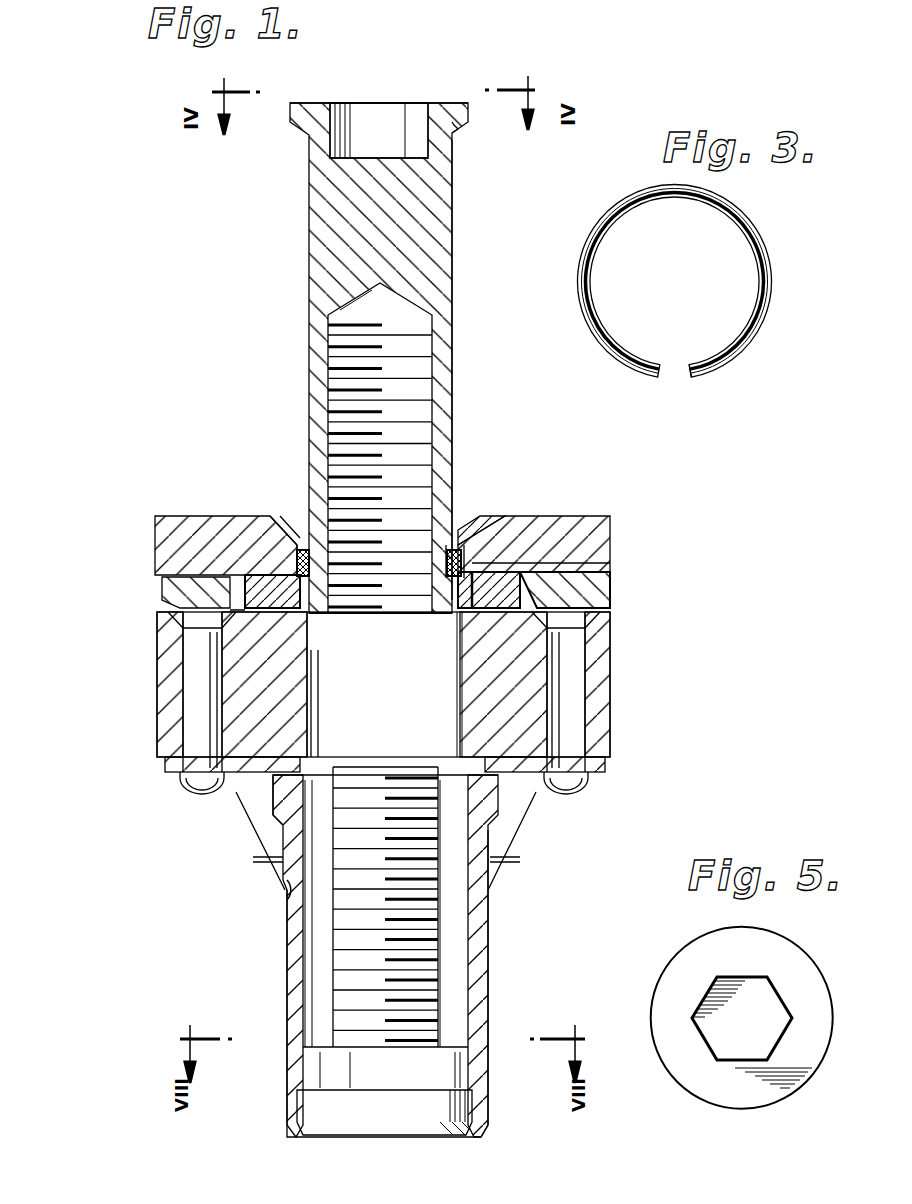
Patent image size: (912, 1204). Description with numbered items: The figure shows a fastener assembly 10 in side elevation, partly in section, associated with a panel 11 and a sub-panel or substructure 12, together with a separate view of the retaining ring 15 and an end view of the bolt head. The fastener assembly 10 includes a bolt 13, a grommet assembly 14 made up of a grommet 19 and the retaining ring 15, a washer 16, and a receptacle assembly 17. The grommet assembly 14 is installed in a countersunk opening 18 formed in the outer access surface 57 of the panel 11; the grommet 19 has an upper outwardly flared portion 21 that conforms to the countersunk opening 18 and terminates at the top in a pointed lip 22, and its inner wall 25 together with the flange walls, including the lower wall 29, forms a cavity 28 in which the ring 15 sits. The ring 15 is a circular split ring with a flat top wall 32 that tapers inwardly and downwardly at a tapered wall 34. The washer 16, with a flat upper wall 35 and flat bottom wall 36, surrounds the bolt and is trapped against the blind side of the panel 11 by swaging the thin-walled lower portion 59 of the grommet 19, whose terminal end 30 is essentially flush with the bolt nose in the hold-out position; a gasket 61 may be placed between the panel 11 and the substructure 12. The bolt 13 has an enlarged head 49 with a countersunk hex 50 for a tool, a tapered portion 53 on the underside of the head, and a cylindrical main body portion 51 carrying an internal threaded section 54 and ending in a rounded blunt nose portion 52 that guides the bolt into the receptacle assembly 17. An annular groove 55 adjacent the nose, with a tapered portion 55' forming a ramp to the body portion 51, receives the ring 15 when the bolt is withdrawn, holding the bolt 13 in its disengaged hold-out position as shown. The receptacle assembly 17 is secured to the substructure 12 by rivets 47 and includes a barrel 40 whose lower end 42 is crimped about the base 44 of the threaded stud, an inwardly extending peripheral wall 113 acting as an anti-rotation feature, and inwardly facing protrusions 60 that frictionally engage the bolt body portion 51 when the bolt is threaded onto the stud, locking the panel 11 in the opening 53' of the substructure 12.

In FIG. 1, the fastener assembly 10 is at (620, 506).
In FIG. 1, the panel 11 is at (612, 529).
In FIG. 1, the sub-panel or substructure 12 is at (612, 692).
In FIG. 1, the bolt 13 is at (306, 196).
In FIG. 5, the bolt 13 is at (725, 1113).
In FIG. 1, the grommet assembly 14 is at (430, 905).
In FIG. 1, the retaining ring 15 is at (448, 560).
In FIG. 3, the retaining ring 15 is at (780, 253).
In FIG. 1, the washer 16 is at (190, 622).
In FIG. 1, the receptacle assembly 17 is at (285, 1000).
In FIG. 1, the countersunk opening 18 is at (478, 546).
In FIG. 1, the grommet 19 is at (525, 580).
In FIG. 1, the upper outwardly flared portion 21 is at (300, 516).
In FIG. 1, the pointed lip 22 is at (482, 514).
In FIG. 1, the inner wall 25 is at (300, 648).
In FIG. 1, the cavity 28 is at (470, 572).
In FIG. 1, the lower wall 29 is at (470, 598).
In FIG. 1, the terminal end 30 is at (290, 600).
In FIG. 3, the flat top wall 32 is at (628, 232).
In FIG. 3, the tapered wall 34 is at (738, 333).
In FIG. 1, the flat upper wall 35 is at (612, 553).
In FIG. 1, the flat bottom wall 36 is at (598, 623).
In FIG. 1, the barrel 40 is at (490, 996).
In FIG. 1, the lower end 42 is at (295, 1130).
In FIG. 1, the base 44 is at (410, 1127).
In FIG. 1, the rivets 47 is at (590, 792).
In FIG. 1, the enlarged head 49 is at (450, 98).
In FIG. 5, the enlarged head 49 is at (700, 945).
In FIG. 1, the countersunk hex 50 is at (420, 112).
In FIG. 5, the countersunk hex 50 is at (778, 1028).
In FIG. 1, the main body portion 51 is at (447, 342).
In FIG. 1, the blunt nose portion 52 is at (455, 622).
In FIG. 1, the tapered portion 53 is at (477, 148).
In FIG. 1, the opening 53' is at (239, 821).
In FIG. 1, the threaded section 54 is at (333, 340).
In FIG. 1, the annular groove 55 is at (373, 660).
In FIG. 1, the tapered portion 55' is at (340, 684).
In FIG. 1, the outer access surface 57 is at (218, 516).
In FIG. 1, the lower portion 59 is at (297, 562).
In FIG. 1, the protrusions 60 is at (300, 893).
In FIG. 1, the gasket 61 is at (170, 597).
In FIG. 1, the inwardly extending peripheral wall 113 is at (300, 1072).